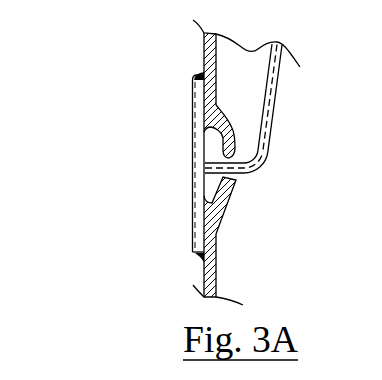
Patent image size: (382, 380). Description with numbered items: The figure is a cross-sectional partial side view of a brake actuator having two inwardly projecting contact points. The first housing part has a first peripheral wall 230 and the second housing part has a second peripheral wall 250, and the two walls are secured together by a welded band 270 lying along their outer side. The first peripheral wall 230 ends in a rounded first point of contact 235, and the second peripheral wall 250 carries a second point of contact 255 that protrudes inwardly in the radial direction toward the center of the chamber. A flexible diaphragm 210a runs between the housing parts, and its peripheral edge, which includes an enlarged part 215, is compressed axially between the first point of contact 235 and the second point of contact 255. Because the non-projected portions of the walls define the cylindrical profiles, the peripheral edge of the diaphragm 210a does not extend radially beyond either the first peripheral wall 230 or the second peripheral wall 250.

The first peripheral wall 230 is at (203, 47).
The diaphragm 210a is at (275, 103).
The first point of contact 235 is at (232, 153).
The welded band 270 is at (191, 163).
The enlarged part 215 is at (216, 174).
The second point of contact 255 is at (231, 181).
The second peripheral wall 250 is at (203, 279).